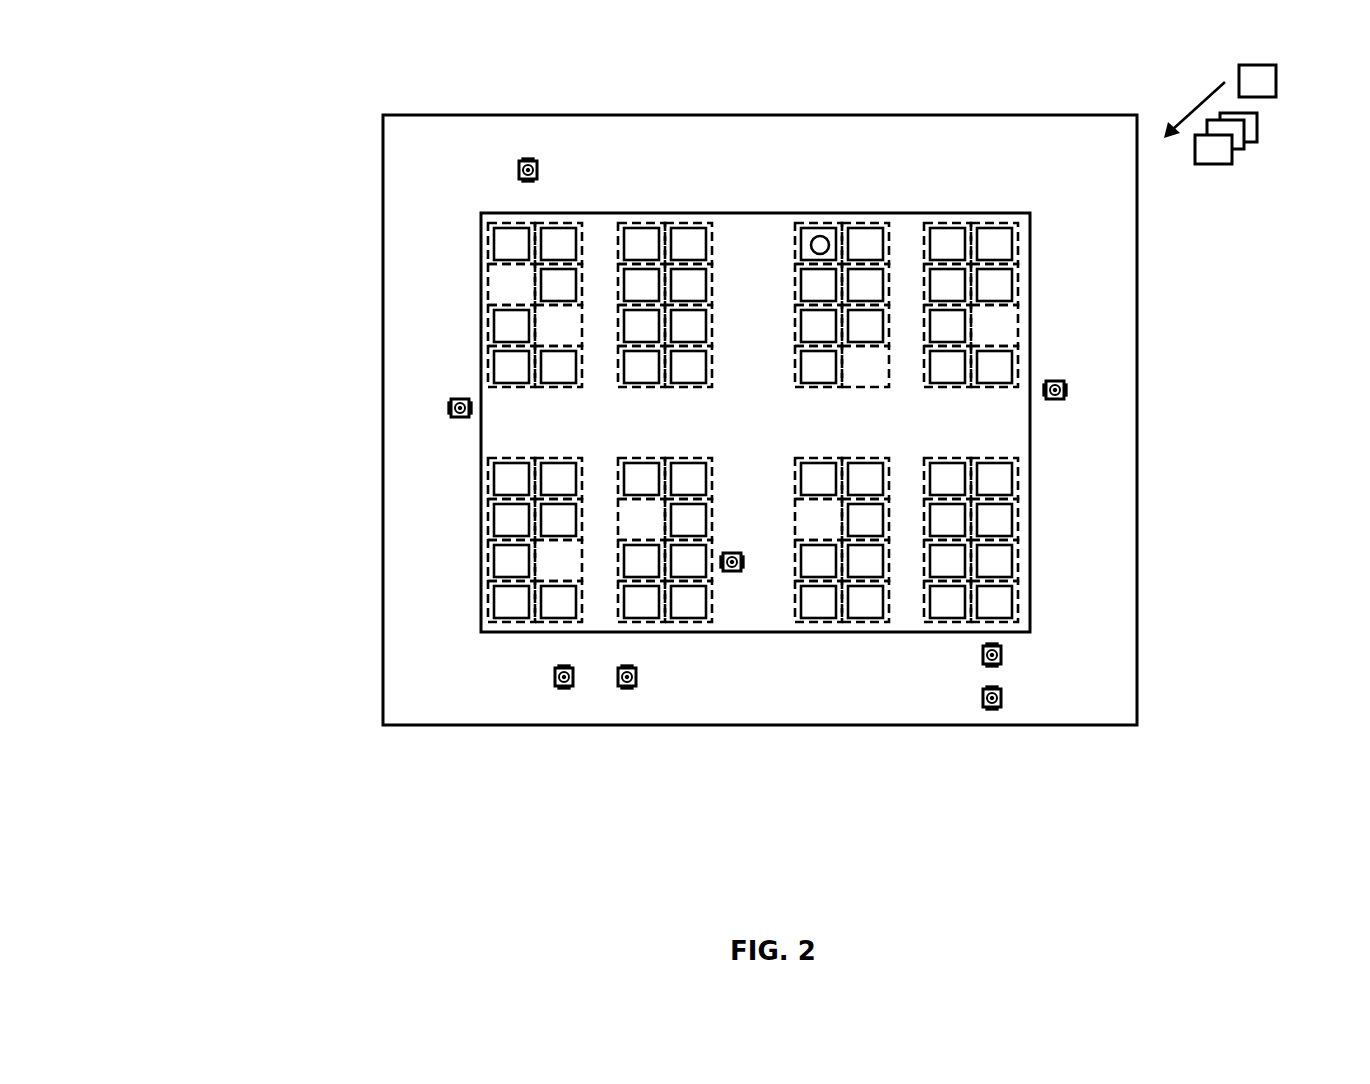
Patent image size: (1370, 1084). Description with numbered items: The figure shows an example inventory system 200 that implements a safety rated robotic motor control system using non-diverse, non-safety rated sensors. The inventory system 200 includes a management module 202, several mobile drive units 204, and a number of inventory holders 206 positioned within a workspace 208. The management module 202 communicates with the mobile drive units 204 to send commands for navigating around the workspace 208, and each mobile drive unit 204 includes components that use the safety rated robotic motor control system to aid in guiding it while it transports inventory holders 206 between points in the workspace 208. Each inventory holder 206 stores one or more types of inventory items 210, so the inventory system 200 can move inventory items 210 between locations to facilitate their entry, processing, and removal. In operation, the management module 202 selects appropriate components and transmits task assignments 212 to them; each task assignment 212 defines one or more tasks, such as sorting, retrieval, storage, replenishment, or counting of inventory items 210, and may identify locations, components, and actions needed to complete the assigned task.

The inventory system 200 is at (152, 126).
The management module 202 is at (1277, 80).
The mobile drive units 204 is at (541, 170).
The inventory holders 206 is at (948, 240).
The workspace 208 is at (648, 115).
The inventory items 210 is at (823, 236).
The task assignments 212 is at (1211, 176).